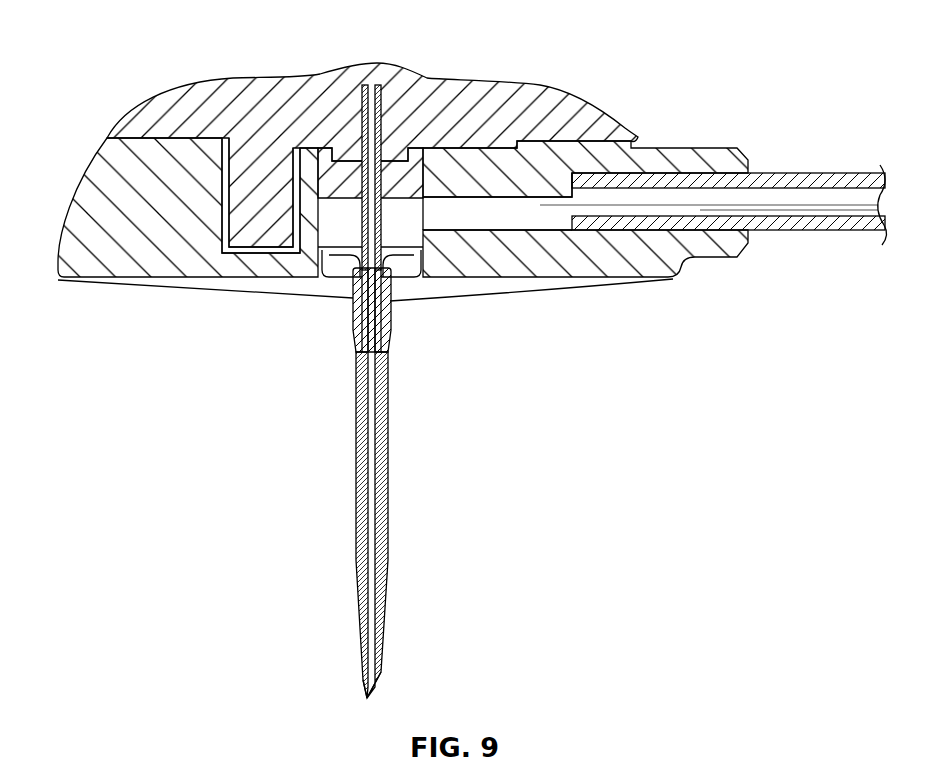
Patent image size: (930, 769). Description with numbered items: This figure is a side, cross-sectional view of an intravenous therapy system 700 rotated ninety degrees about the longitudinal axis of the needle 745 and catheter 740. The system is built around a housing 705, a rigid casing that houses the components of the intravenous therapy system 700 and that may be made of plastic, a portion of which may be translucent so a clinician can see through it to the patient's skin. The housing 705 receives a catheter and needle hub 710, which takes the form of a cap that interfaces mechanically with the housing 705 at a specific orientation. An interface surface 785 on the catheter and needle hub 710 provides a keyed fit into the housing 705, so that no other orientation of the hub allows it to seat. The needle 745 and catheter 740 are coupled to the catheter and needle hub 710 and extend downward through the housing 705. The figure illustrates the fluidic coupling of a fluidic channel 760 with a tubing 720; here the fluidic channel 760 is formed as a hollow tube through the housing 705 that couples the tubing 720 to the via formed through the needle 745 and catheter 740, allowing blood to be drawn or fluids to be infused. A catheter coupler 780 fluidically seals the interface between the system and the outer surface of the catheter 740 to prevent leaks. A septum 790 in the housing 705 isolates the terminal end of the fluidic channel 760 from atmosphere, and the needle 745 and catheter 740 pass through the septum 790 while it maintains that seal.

The intravenous therapy system 700 is at (105, 43).
The housing 705 is at (110, 177).
The catheter and needle hub 710 is at (177, 107).
The tubing 720 is at (840, 196).
The catheter 740 is at (387, 467).
The needle 745 is at (375, 667).
The fluidic channel 760 is at (483, 215).
The catheter coupler 780 is at (353, 313).
The interface surface 785 is at (240, 218).
The septum 790 is at (345, 172).